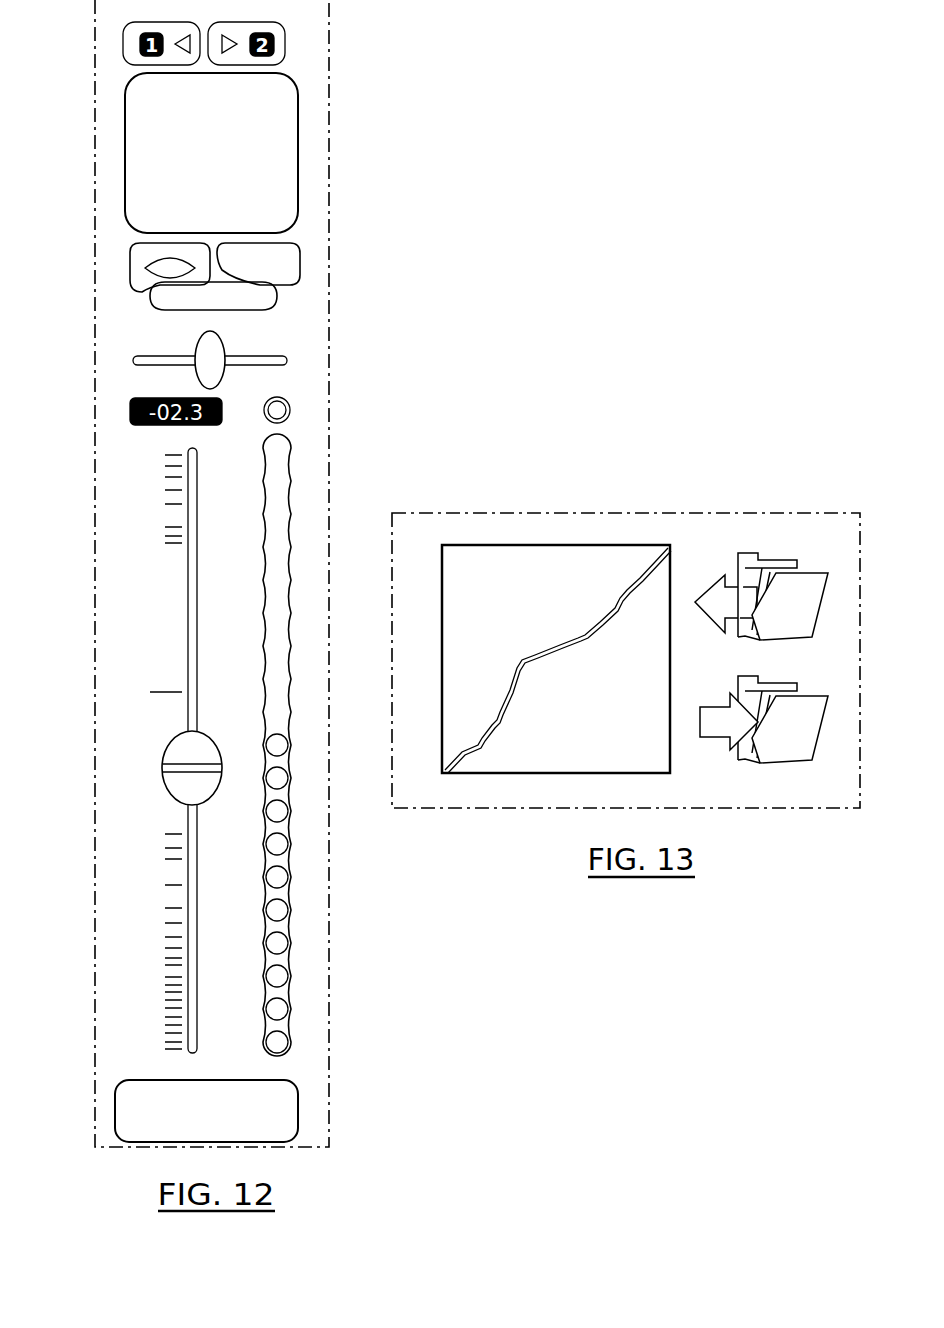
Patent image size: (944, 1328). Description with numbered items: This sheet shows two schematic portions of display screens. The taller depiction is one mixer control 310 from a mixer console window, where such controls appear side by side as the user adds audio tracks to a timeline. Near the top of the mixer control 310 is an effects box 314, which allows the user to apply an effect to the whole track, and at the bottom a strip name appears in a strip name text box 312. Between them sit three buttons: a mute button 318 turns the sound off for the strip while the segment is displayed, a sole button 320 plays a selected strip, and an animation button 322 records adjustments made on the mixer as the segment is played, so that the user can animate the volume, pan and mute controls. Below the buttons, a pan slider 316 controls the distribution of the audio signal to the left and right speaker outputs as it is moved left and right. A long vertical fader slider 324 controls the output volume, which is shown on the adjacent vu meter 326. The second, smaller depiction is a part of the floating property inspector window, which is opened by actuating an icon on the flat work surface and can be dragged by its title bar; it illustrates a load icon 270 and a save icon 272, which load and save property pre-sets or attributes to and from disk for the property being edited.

In FIG. 12, the mixer control 310 is at (338, 80).
In FIG. 12, the strip name text box 312 is at (262, 1080).
In FIG. 12, the effects box 314 is at (298, 160).
In FIG. 12, the pan slider 316 is at (225, 378).
In FIG. 12, the mute button 318 is at (132, 270).
In FIG. 12, the sole button 320 is at (300, 258).
In FIG. 12, the animation button 322 is at (255, 310).
In FIG. 12, the fader slider 324 is at (172, 655).
In FIG. 12, the vu meter 326 is at (130, 947).
In FIG. 13, the load icon 270 is at (820, 603).
In FIG. 13, the save icon 272 is at (820, 728).